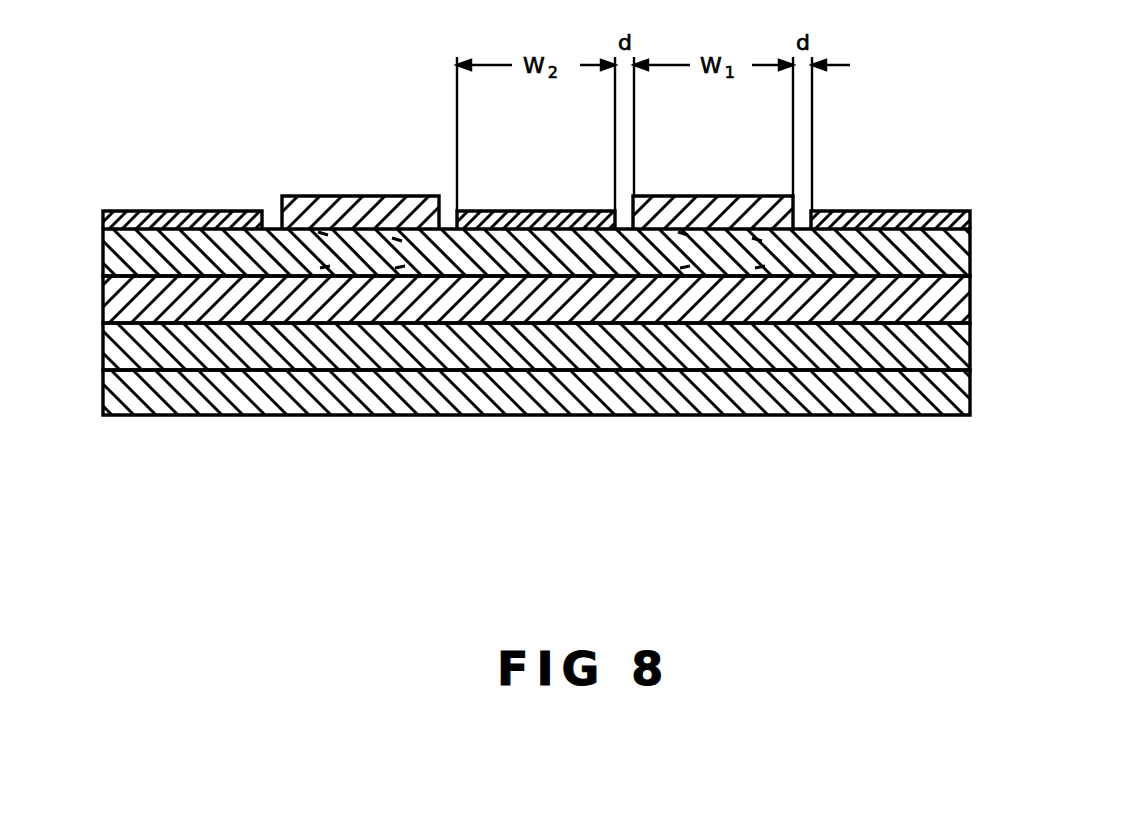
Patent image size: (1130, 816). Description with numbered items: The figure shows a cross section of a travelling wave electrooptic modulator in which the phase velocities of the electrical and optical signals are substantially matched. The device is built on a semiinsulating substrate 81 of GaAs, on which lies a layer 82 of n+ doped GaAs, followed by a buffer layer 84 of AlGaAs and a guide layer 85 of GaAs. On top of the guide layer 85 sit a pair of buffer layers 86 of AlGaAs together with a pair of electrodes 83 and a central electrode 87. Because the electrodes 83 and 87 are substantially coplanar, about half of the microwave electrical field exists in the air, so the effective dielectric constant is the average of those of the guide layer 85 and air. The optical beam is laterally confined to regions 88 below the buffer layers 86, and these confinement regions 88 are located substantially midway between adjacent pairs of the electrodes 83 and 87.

The semiinsulating substrate 81 is at (913, 402).
The layer of n+ doped GaAs 82 is at (968, 340).
The electrodes 83 is at (915, 211).
The buffer layer 84 is at (965, 280).
The guide layer 85 is at (968, 245).
The buffer layers 86 is at (767, 207).
The electrode 87 is at (527, 210).
The optical confinement regions 88 is at (682, 265).